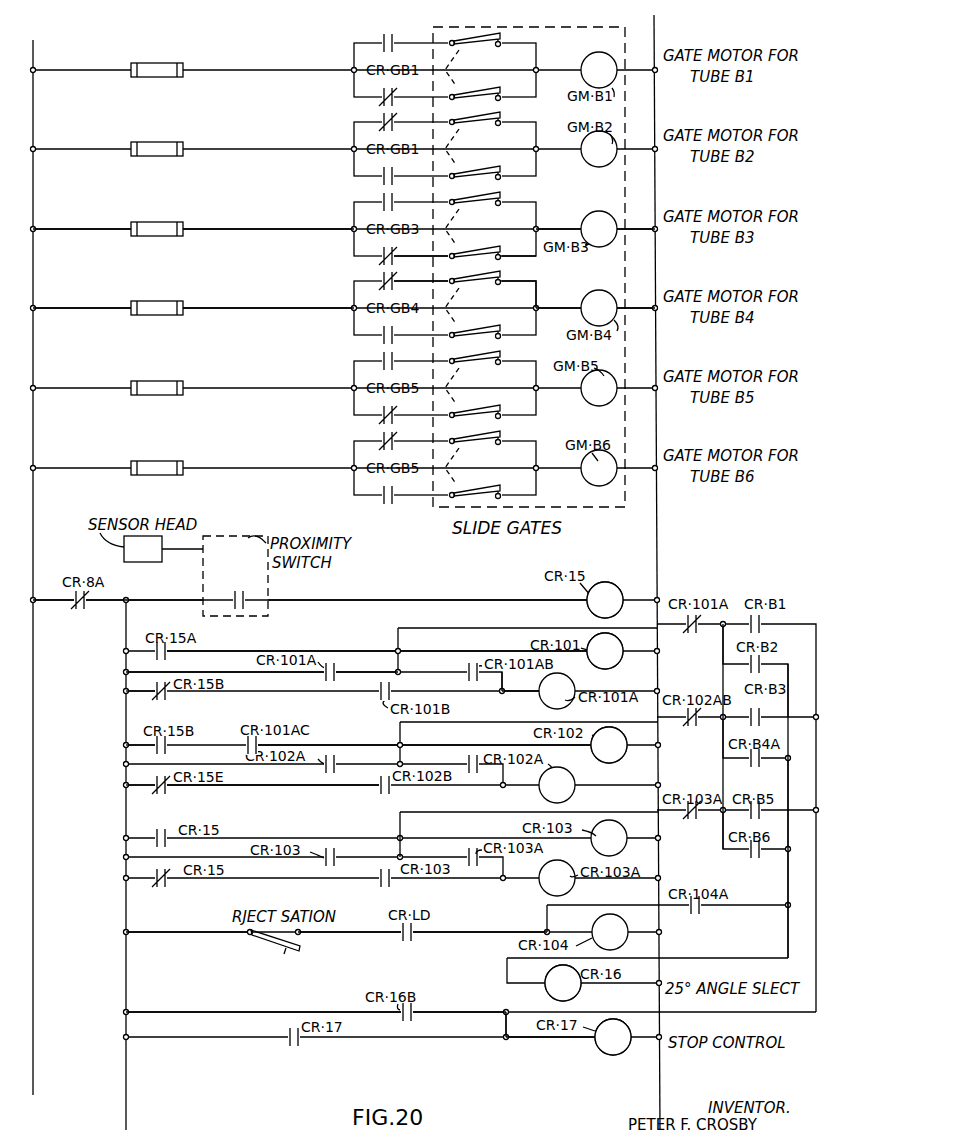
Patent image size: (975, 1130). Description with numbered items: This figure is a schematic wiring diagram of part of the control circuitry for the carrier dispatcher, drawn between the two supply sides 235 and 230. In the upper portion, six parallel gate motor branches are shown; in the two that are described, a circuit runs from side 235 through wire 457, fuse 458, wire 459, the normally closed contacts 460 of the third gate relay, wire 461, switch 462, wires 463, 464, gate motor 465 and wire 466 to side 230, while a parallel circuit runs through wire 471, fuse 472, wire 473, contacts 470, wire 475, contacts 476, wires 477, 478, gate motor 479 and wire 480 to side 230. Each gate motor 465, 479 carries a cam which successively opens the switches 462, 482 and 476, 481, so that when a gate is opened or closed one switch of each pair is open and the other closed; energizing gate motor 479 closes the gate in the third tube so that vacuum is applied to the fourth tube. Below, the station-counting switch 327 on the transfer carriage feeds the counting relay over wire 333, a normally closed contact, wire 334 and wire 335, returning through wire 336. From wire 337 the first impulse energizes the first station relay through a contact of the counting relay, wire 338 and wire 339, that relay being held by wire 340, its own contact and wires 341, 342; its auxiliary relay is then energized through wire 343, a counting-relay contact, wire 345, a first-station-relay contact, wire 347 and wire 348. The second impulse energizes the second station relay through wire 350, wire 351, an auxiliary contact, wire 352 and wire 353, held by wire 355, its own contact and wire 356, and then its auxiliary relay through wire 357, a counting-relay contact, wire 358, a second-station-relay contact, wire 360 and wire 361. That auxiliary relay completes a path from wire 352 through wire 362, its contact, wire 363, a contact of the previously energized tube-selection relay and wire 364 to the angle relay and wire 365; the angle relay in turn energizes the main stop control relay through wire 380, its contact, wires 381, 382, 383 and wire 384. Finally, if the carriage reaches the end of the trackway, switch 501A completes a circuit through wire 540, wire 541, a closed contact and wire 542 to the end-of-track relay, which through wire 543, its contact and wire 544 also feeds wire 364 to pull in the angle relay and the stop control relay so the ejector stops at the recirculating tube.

The side 230 is at (655, 188).
The side 235 is at (33, 270).
The switch 327 is at (246, 598).
The wire 333 is at (50, 598).
The wire 334 is at (150, 598).
The wire 335 is at (368, 600).
The wire 336 is at (630, 592).
The wire 337 is at (126, 630).
The wire 338 is at (244, 653).
The wire 339 is at (638, 660).
The wire 340 is at (262, 676).
The wire 341 is at (378, 674).
The wire 342 is at (394, 660).
The wire 343 is at (132, 695).
The wire 345 is at (340, 698).
The wire 347 is at (462, 694).
The wire 348 is at (574, 690).
The wire 350 is at (132, 746).
The wire 351 is at (207, 743).
The wire 352 is at (330, 752).
The wire 353 is at (636, 758).
The wire 355 is at (244, 788).
The wire 356 is at (370, 772).
The wire 357 is at (141, 790).
The wire 358 is at (240, 788).
The wire 360 is at (482, 786).
The wire 361 is at (586, 786).
The wire 362 is at (512, 730).
The wire 363 is at (723, 738).
The wire 364 is at (788, 776).
The wire 365 is at (620, 990).
The wire 380 is at (205, 1013).
The wire 381 is at (438, 1013).
The wire 382 is at (506, 1027).
The wire 383 is at (542, 1045).
The wire 384 is at (652, 1041).
The wire 457 is at (46, 308).
The fuse 458 is at (160, 312).
The wire 459 is at (256, 308).
The normally closed contacts 460 is at (384, 275).
The wire 461 is at (418, 275).
The switch 462 is at (478, 286).
The wire 463 is at (537, 290).
The wire 464 is at (577, 312).
The gate motor 465 is at (601, 293).
The wire 466 is at (652, 289).
The contacts 470 is at (383, 249).
The wire 471 is at (78, 229).
The fuse 472 is at (162, 232).
The wire 473 is at (273, 229).
The wire 475 is at (404, 256).
The contacts 476 is at (492, 257).
The wire 477 is at (530, 250).
The wire 478 is at (553, 229).
The gate motor 479 is at (600, 222).
The wire 480 is at (655, 234).
The switch 481 is at (490, 205).
The switch 482 is at (490, 338).
The switch 501A is at (294, 960).
The wire 540 is at (176, 934).
The wire 541 is at (326, 936).
The wire 542 is at (458, 932).
The wire 543 is at (669, 908).
The wire 544 is at (740, 906).